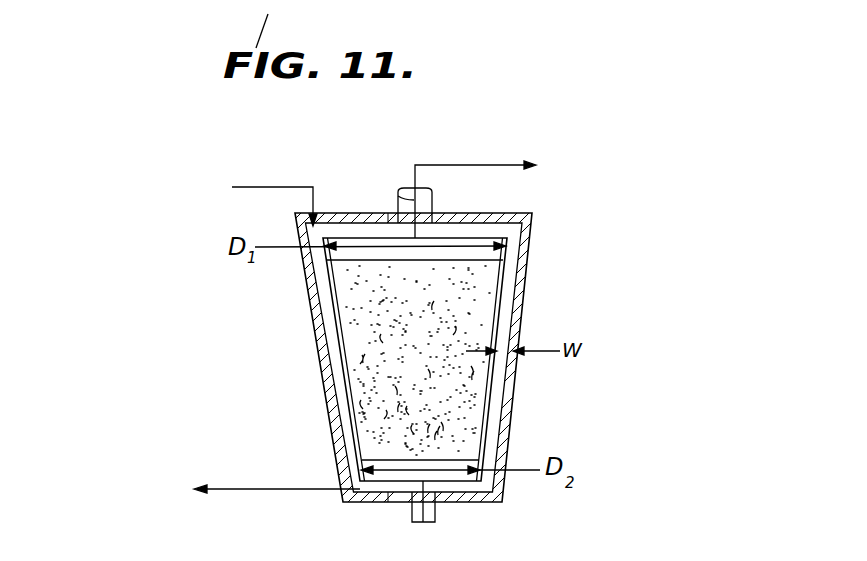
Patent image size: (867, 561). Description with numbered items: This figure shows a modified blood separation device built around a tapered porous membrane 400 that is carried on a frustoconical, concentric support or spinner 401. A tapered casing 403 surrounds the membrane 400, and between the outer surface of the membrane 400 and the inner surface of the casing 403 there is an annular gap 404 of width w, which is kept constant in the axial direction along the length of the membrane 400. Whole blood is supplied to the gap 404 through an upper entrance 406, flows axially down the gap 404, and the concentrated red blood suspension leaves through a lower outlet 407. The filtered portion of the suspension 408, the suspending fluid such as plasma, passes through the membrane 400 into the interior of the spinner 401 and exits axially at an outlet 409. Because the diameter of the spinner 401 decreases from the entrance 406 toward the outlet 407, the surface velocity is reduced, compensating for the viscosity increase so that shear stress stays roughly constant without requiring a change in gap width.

The tapered porous membrane 400 is at (460, 388).
The support or spinner 401 is at (489, 237).
The tapered casing 403 is at (527, 275).
The gap 404 is at (506, 318).
The whole blood supply upper entrance 406 is at (314, 200).
The lower outlet 407 is at (267, 489).
The filtered portion of the suspension 408 is at (477, 165).
The outlet 409 is at (398, 204).